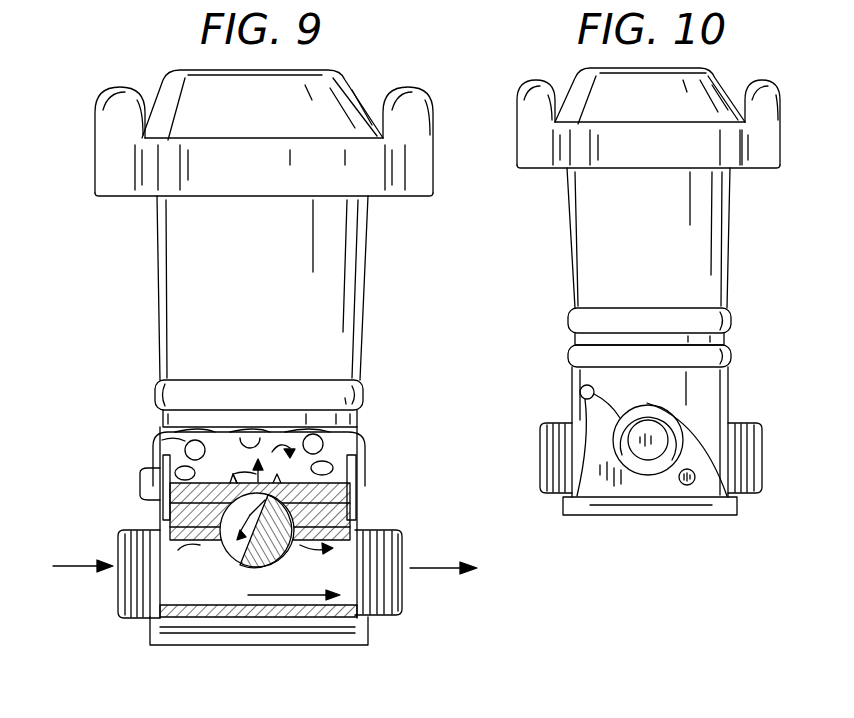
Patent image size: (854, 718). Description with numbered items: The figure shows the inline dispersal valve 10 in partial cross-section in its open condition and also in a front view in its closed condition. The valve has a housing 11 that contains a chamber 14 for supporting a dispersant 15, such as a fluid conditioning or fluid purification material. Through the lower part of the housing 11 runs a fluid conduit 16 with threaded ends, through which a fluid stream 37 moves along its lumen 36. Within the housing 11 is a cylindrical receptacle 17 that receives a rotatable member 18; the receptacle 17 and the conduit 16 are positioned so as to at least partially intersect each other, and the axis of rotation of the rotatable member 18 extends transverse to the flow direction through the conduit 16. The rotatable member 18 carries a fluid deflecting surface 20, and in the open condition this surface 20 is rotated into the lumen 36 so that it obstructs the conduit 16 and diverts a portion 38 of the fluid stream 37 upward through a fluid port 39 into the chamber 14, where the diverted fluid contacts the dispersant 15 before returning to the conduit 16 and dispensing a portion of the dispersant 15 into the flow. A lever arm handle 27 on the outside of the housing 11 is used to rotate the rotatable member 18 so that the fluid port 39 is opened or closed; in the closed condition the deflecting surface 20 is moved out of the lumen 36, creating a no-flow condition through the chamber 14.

In FIG. 9, the inline dispersal valve 10 is at (438, 258).
In FIG. 10, the inline dispersal valve 10 is at (776, 238).
In FIG. 9, the housing 11 is at (363, 315).
In FIG. 10, the housing 11 is at (730, 257).
In FIG. 9, the chamber 14 is at (234, 469).
In FIG. 9, the dispersant 15 is at (172, 452).
In FIG. 9, the fluid conduit 16 is at (140, 616).
In FIG. 10, the fluid conduit 16 is at (764, 460).
In FIG. 9, the cylindrical receptacle 17 is at (236, 528).
In FIG. 9, the rotatable member 18 is at (284, 506).
In FIG. 10, the rotatable member 18 is at (648, 452).
In FIG. 9, the fluid deflecting surface 20 is at (230, 548).
In FIG. 10, the lever arm handle 27 is at (596, 412).
In FIG. 9, the lumen 36 is at (310, 589).
In FIG. 9, the fluid stream 37 is at (80, 569).
In FIG. 9, the diverted portion of the fluid stream 38 is at (192, 540).
In FIG. 9, the fluid port 39 is at (275, 473).